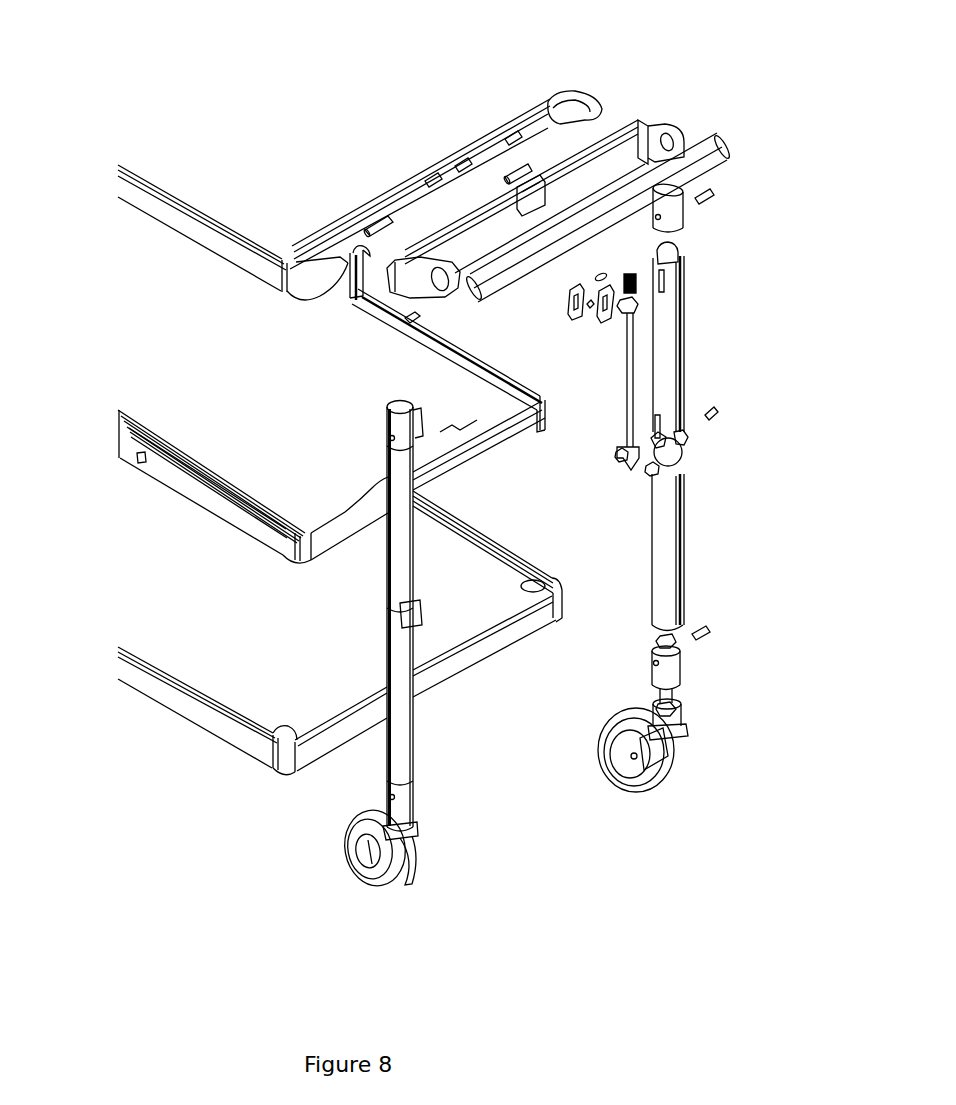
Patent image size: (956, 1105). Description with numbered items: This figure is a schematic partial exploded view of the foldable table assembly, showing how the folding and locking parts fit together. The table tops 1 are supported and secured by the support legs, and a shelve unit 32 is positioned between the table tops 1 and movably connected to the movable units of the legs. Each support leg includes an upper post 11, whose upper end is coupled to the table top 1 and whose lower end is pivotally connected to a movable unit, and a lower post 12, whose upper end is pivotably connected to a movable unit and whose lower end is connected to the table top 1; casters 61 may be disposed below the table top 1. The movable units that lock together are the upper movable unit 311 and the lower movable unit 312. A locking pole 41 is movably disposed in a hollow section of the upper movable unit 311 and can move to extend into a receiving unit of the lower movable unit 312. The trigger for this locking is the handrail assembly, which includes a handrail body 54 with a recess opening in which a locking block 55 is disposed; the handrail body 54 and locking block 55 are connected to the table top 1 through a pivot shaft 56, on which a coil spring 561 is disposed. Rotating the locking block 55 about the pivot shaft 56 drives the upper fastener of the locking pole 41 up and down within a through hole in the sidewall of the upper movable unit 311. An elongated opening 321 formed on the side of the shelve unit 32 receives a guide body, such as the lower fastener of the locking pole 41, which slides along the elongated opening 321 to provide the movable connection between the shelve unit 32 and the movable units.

The table top 1 is at (280, 146).
The upper post 11 is at (673, 203).
The lower post 12 is at (662, 672).
The shelve unit 32 is at (331, 416).
The elongated opening 321 is at (183, 480).
The locking pole 41 is at (626, 418).
The handrail body 54 is at (610, 165).
The locking block 55 is at (523, 170).
The pivot shaft 56 is at (440, 317).
The coil spring 561 is at (413, 321).
The upper movable unit 311 is at (666, 372).
The lower movable unit 312 is at (665, 537).
The caster 61 is at (602, 735).